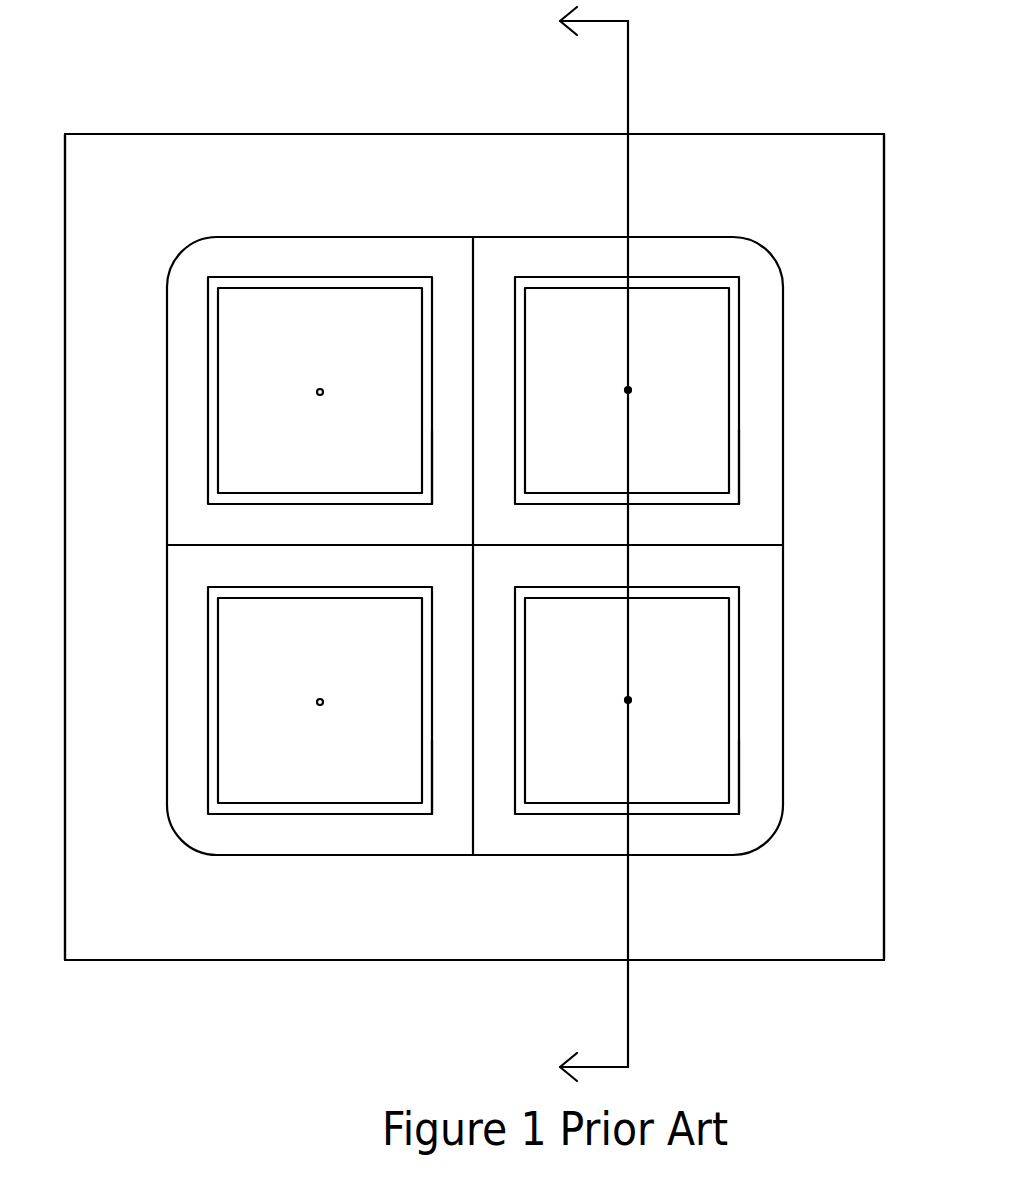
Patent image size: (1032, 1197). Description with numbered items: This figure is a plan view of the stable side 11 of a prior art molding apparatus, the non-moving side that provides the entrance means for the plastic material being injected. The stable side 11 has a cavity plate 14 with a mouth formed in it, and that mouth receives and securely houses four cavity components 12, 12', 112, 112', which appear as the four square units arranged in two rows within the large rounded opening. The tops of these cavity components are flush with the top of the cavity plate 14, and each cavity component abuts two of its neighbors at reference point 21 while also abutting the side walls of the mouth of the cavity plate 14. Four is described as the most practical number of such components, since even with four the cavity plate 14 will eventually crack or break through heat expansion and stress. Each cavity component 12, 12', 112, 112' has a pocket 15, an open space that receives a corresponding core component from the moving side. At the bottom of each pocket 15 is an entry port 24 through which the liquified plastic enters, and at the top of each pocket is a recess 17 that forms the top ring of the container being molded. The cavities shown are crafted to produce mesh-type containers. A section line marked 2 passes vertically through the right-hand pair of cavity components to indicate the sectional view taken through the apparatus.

The stable side 11 is at (474, 499).
The cavity plate 14 is at (474, 547).
The reference point 21 is at (475, 499).
The cavity component 112 is at (333, 367).
The cavity component 12 is at (627, 367).
The cavity component 112' is at (336, 678).
The cavity component 12' is at (627, 678).
The pocket 15 is at (473, 545).
The recess 17 is at (545, 618).
The entry port 24 is at (435, 519).
The section line 2- 2 is at (579, 546).